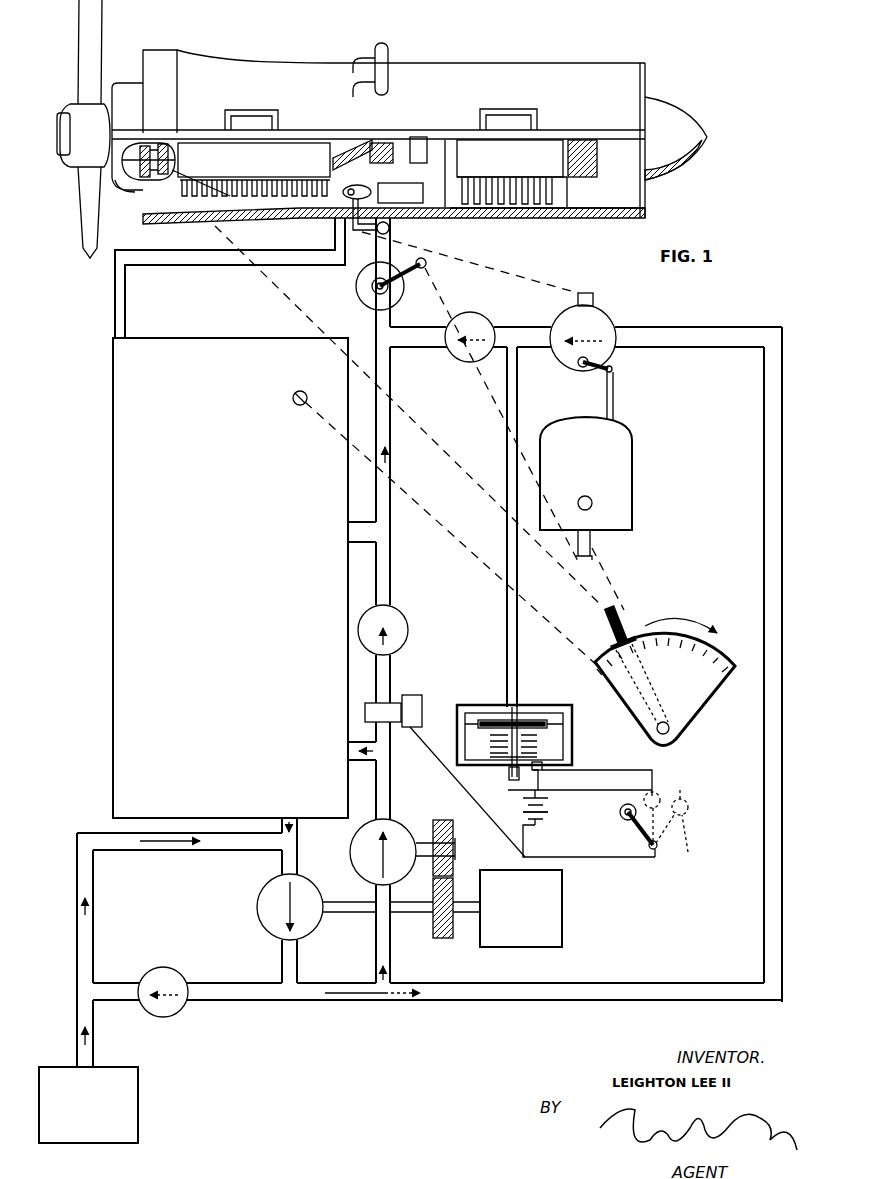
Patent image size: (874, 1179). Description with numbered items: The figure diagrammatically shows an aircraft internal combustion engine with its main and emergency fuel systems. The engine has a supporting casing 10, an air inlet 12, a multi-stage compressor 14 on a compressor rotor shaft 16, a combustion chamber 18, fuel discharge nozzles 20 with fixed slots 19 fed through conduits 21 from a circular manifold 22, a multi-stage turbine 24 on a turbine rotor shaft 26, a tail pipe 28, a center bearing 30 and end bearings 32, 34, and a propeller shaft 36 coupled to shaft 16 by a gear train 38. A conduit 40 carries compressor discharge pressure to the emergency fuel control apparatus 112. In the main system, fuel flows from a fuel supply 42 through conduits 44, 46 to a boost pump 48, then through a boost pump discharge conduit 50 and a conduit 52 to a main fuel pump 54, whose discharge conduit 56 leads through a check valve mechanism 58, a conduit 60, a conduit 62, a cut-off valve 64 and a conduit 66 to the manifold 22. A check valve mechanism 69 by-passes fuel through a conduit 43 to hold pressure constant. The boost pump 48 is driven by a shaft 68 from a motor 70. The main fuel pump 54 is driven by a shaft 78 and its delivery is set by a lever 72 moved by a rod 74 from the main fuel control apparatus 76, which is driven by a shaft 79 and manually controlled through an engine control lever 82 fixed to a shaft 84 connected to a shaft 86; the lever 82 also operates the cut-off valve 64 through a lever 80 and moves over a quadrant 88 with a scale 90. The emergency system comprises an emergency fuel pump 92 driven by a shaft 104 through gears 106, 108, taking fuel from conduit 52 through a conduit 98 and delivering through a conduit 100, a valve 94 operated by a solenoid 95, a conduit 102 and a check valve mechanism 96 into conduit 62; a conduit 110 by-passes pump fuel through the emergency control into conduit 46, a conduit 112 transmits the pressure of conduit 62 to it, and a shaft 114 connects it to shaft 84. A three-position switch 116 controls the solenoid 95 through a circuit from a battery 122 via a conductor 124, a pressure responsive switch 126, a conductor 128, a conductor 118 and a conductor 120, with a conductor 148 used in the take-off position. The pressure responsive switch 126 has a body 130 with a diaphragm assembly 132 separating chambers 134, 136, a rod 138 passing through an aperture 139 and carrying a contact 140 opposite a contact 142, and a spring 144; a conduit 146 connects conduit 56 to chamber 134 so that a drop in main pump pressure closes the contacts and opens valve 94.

The supporting casing 10 is at (255, 76).
The air inlet 12 is at (127, 202).
The multi-stage compressor 14 is at (293, 218).
The compressor rotor shaft 16 is at (262, 166).
The combustion chamber 18 is at (400, 193).
The fixed slots 19 is at (333, 170).
The fuel discharge nozzle 20 is at (345, 208).
The conduit 21 is at (361, 230).
The circular manifold 22 is at (388, 52).
The multi-stage turbine 24 is at (543, 220).
The turbine rotor shaft 26 is at (523, 165).
The tail pipe 28 is at (640, 208).
The center bearing 30 is at (393, 150).
The end bearing 32 is at (585, 145).
The end bearing 34 is at (160, 145).
The propeller shaft 36 is at (108, 108).
The gear train 38 is at (140, 148).
The conduit 40 is at (125, 300).
The fuel supply 42 is at (75, 1141).
The conduit 43 is at (103, 1000).
The conduit 44 is at (80, 875).
The conduit 46 is at (282, 857).
The boost pump 48 is at (317, 916).
The boost pump discharge conduit 50 is at (283, 958).
The conduit 52 is at (552, 995).
The main fuel pump 54 is at (604, 325).
The main pump discharge conduit 56 is at (500, 338).
The check valve mechanism 58 is at (452, 320).
The conduit 60 is at (395, 340).
The conduit 62 is at (392, 450).
The cut-off valve 64 is at (357, 288).
The conduit 66 is at (391, 234).
The shaft 68 is at (362, 912).
The check valve mechanism 69 is at (185, 1005).
The motor 70 is at (530, 935).
The lever 72 is at (600, 372).
The rod 74 is at (613, 395).
The main fuel control apparatus 76 is at (616, 527).
The shaft 78 is at (592, 296).
The shaft 79 is at (593, 540).
The lever 80 is at (427, 265).
The engine control lever 82 is at (607, 626).
The shaft 84 is at (670, 730).
The shaft 86 is at (576, 556).
The quadrant 88 is at (690, 692).
The scale 90 is at (710, 655).
The emergency fuel pump 92 is at (411, 861).
The valve 94 is at (412, 695).
The solenoid 95 is at (418, 700).
The check valve mechanism 96 is at (408, 620).
The conduit 98 is at (380, 952).
The conduit 100 is at (386, 770).
The conduit 102 is at (386, 703).
The shaft 104 is at (458, 852).
The gear 106 is at (453, 832).
The gear 108 is at (440, 940).
The conduit 110 is at (362, 758).
The conduit 112 is at (362, 530).
The shaft 114 is at (293, 397).
The 3-position switch 116 is at (640, 831).
The conductor 118 is at (588, 857).
The conductor 120 is at (523, 838).
The battery 122 is at (551, 822).
The conductor 124 is at (530, 790).
The pressure responsive switch 126 is at (528, 670).
The conductor 128 is at (590, 770).
The body 130 is at (520, 712).
The diaphragm assembly 132 is at (560, 712).
The chamber 134 is at (512, 720).
The chamber 136 is at (542, 736).
The rod 138 is at (469, 794).
The aperture 139 is at (509, 777).
The contact 140 is at (545, 795).
The contact 142 is at (548, 772).
The spring 144 is at (550, 748).
The conduit 146 is at (507, 525).
The conductor 148 is at (655, 790).